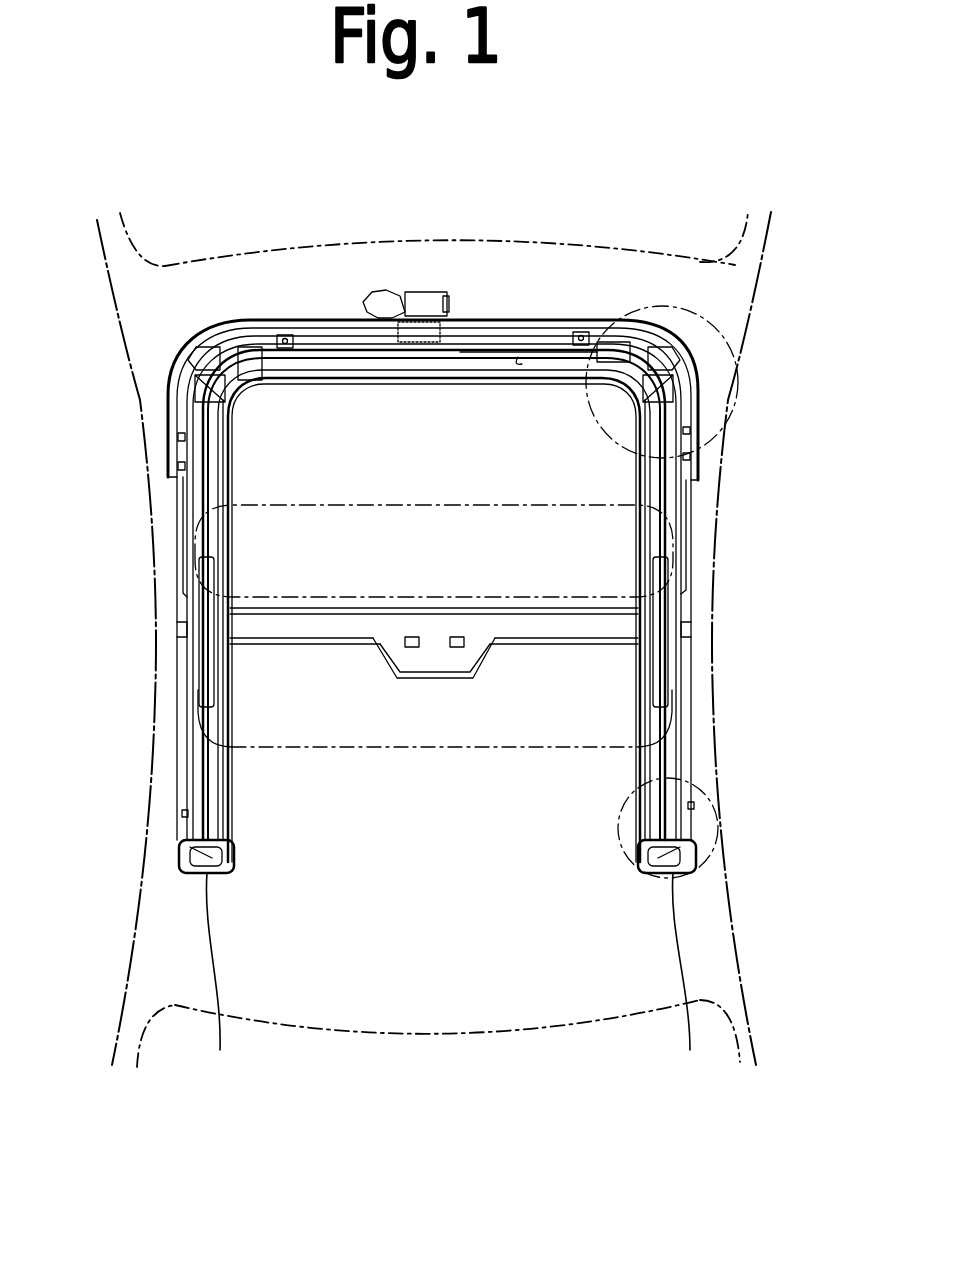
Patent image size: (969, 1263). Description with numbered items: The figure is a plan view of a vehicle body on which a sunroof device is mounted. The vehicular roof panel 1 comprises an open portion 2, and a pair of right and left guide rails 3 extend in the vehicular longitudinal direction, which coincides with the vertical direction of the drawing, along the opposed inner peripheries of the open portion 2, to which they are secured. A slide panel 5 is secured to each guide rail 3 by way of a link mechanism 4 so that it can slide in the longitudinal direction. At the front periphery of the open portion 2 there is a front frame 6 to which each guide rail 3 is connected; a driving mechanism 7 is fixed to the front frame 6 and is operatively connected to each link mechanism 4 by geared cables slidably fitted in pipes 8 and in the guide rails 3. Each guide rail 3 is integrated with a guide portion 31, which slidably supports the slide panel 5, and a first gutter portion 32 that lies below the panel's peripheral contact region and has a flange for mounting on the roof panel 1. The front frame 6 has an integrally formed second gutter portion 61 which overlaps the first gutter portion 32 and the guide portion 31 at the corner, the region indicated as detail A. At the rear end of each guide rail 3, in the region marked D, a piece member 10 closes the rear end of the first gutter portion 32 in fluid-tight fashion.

The vehicular roof panel 1 is at (178, 593).
The open portion 2 is at (518, 357).
The guide rail 3 is at (176, 540).
The link mechanism 4 is at (196, 697).
The slide panel 5 is at (340, 527).
The front frame 6 is at (347, 333).
The driving mechanism 7 is at (385, 305).
The pipe 8 is at (256, 328).
The piece member 10 is at (453, 990).
The guide portion 31 is at (213, 780).
The first gutter portion 32 is at (196, 510).
The second gutter portion 61 is at (670, 338).
The detail region A is at (745, 371).
The portion D is at (718, 860).